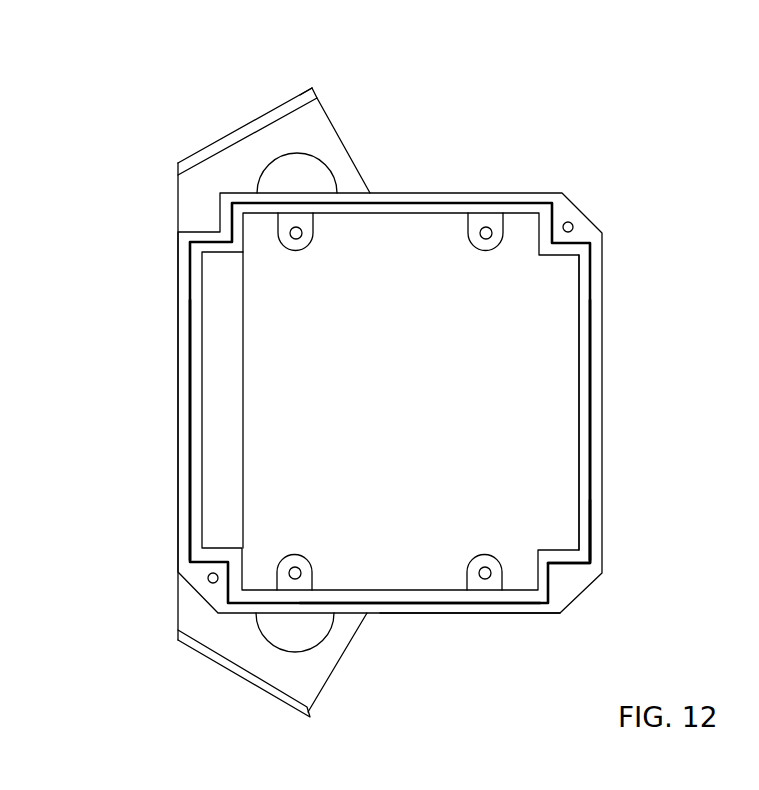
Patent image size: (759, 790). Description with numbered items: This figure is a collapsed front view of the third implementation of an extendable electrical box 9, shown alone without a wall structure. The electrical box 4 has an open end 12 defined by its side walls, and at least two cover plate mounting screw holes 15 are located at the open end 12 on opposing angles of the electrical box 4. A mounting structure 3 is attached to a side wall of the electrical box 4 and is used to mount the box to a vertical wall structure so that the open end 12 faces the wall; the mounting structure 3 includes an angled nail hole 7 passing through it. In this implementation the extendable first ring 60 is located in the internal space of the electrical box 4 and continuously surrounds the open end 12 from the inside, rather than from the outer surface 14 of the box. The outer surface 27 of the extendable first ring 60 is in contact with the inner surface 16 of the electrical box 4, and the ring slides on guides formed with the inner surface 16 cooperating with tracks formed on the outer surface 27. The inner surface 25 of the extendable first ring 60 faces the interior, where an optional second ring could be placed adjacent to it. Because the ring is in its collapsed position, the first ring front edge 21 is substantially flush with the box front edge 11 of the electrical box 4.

The extendable electrical box 9 is at (92, 122).
The mounting structure 3 is at (242, 165).
The angled nail hole 7 is at (315, 93).
The outer surface 14 is at (467, 192).
The cover plate mounting screw holes 15 is at (570, 225).
The extendable first ring 60 is at (582, 301).
The electrical box 4 is at (593, 335).
The outer surface 27 is at (192, 424).
The inner surface 16 is at (588, 450).
The inner surface 25 is at (576, 503).
The first ring front edge 21 is at (447, 595).
The box front edge 11 is at (516, 607).
The open end 12 is at (457, 442).